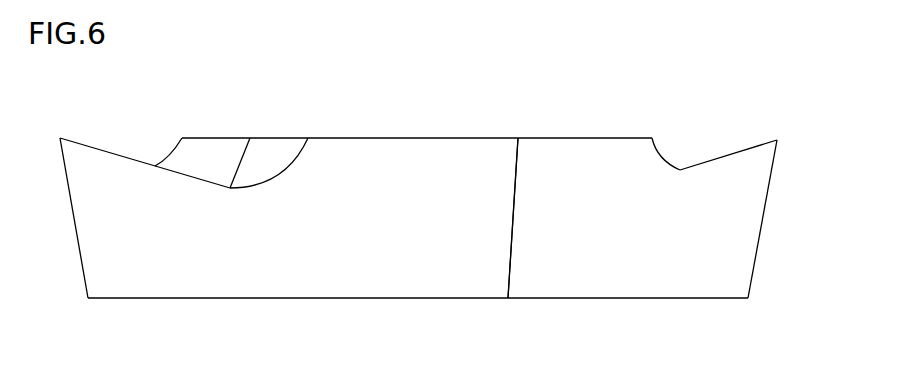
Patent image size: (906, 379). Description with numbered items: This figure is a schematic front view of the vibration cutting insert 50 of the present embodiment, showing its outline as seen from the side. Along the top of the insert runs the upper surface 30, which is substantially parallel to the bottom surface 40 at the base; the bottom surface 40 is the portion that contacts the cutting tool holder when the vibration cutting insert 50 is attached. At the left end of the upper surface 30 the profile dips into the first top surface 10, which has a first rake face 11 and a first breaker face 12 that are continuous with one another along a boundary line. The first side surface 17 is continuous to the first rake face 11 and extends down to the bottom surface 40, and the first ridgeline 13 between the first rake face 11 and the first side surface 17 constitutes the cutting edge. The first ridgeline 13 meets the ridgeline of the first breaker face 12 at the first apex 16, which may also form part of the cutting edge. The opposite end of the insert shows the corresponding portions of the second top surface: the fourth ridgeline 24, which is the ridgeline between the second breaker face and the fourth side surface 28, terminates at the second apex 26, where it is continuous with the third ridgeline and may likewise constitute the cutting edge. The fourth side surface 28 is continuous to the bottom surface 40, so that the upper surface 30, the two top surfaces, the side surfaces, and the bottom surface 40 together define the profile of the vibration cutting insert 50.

The vibration cutting insert 50 is at (661, 89).
The first top surface 10 is at (222, 88).
The first rake face 11 is at (267, 162).
The first breaker face 12 is at (225, 162).
The first ridgeline 13 is at (112, 158).
The first apex 16 is at (60, 135).
The first side surface 17 is at (172, 248).
The fourth ridgeline 24 is at (705, 160).
The second apex 26 is at (782, 137).
The fourth side surface 28 is at (617, 265).
The upper surface 30 is at (415, 136).
The bottom surface 40 is at (418, 298).